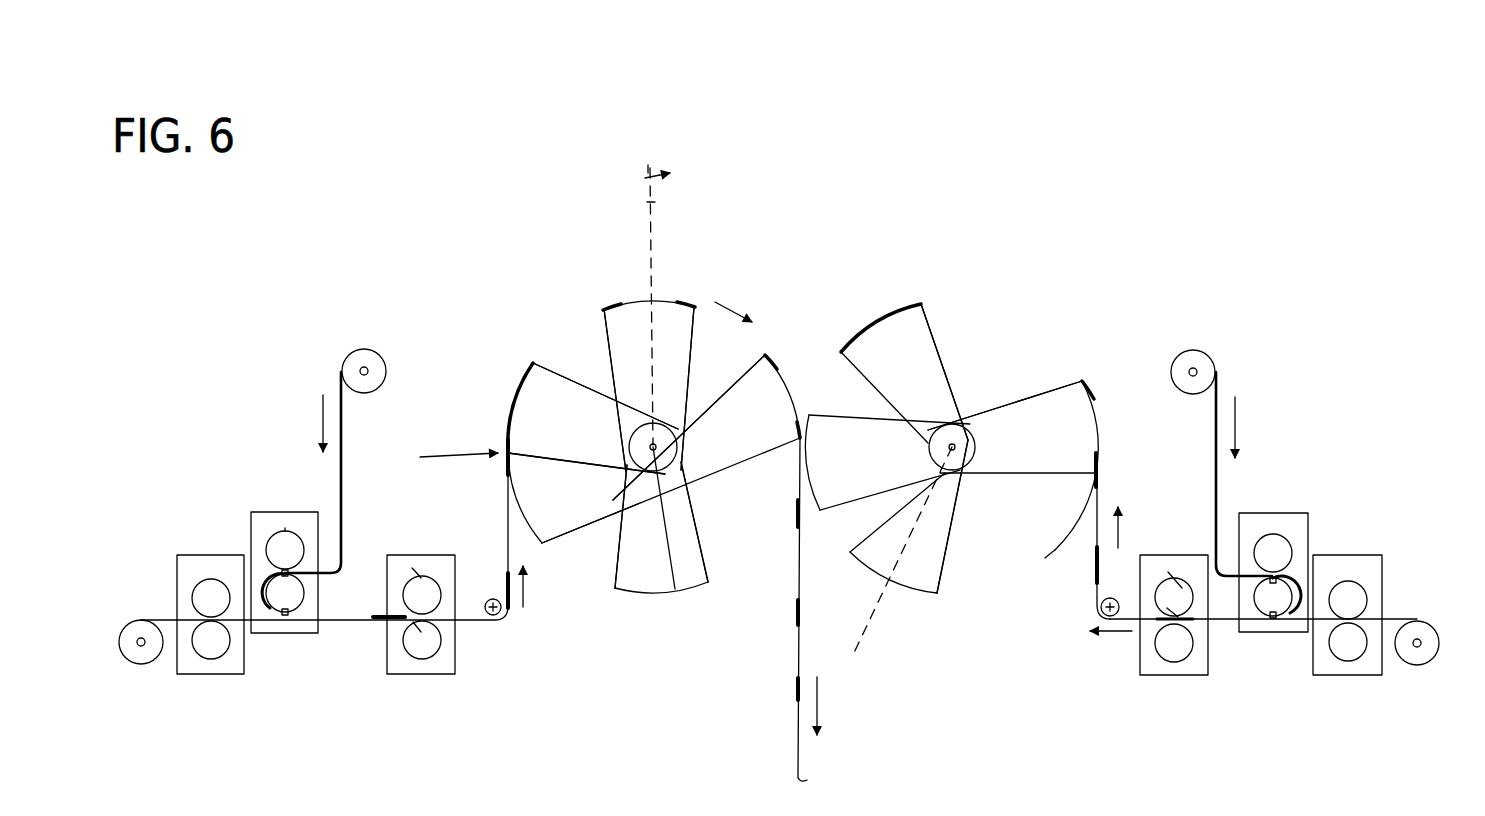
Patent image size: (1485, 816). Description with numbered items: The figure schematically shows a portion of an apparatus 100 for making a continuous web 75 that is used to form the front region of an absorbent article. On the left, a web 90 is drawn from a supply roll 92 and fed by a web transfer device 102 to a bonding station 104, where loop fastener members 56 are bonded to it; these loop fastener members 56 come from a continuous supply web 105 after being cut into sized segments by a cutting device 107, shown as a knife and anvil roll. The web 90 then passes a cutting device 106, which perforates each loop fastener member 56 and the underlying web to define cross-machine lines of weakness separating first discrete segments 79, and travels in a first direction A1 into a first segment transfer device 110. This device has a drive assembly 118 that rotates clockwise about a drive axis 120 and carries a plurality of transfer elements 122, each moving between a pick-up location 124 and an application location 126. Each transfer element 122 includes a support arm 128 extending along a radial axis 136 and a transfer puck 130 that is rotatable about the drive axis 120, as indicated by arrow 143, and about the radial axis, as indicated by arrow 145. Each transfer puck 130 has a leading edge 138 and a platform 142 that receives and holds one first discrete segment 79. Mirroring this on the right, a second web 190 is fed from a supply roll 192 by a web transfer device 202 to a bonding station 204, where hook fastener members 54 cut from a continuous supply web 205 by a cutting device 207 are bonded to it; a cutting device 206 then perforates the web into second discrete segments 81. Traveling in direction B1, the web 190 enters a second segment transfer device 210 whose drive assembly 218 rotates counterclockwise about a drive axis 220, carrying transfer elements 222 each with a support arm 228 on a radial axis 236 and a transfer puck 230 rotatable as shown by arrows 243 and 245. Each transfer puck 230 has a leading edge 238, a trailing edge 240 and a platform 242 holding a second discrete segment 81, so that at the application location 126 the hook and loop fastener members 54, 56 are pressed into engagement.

The apparatus 100 is at (1141, 246).
The first segment transfer device 110 is at (537, 345).
The second segment transfer device 210 is at (977, 325).
The web 90 is at (172, 619).
The supply roll 92 is at (139, 664).
The web transfer device 102 is at (207, 550).
The bonding station 104 is at (300, 640).
The continuous supply web 105 is at (337, 379).
The cutting device 106 is at (415, 553).
The cutting device 107 is at (268, 542).
The pick-up location 124 is at (439, 458).
The loop fastener member 56 is at (380, 615).
The first discrete segment 79 is at (637, 297).
The second discrete segment 81 is at (870, 330).
The hook fastener member 54 is at (841, 352).
The drive assembly 118 is at (612, 475).
The drive axis 120 is at (660, 590).
The transfer element 122 is at (563, 367).
The application location 126 is at (797, 444).
The support arm 128 is at (608, 397).
The transfer puck 130 is at (660, 303).
The radial axis 136 is at (648, 202).
The leading edge 138 is at (616, 590).
The platform 142 is at (640, 593).
The arrow 143 is at (736, 296).
The arrow 145 is at (633, 177).
The drive assembly 218 is at (957, 420).
The drive axis 220 is at (1003, 420).
The transfer element 222 is at (934, 323).
The support arm 228 is at (858, 418).
The transfer puck 230 is at (892, 307).
The radial axis 236 is at (809, 664).
The leading edge 238 is at (841, 513).
The trailing edge 240 is at (928, 590).
The platform 242 is at (877, 573).
The arrow 243 is at (807, 390).
The arrow 245 is at (889, 531).
The continuous web 75 is at (839, 730).
The second web 190 is at (1395, 619).
The supply roll 192 is at (1415, 665).
The web transfer device 202 is at (1347, 553).
The bonding station 204 is at (1293, 627).
The continuous supply web 205 is at (1220, 477).
The cutting device 206 is at (1158, 679).
The cutting device 207 is at (1284, 534).
The arrow A1 is at (516, 624).
The arrow B1 is at (1120, 528).